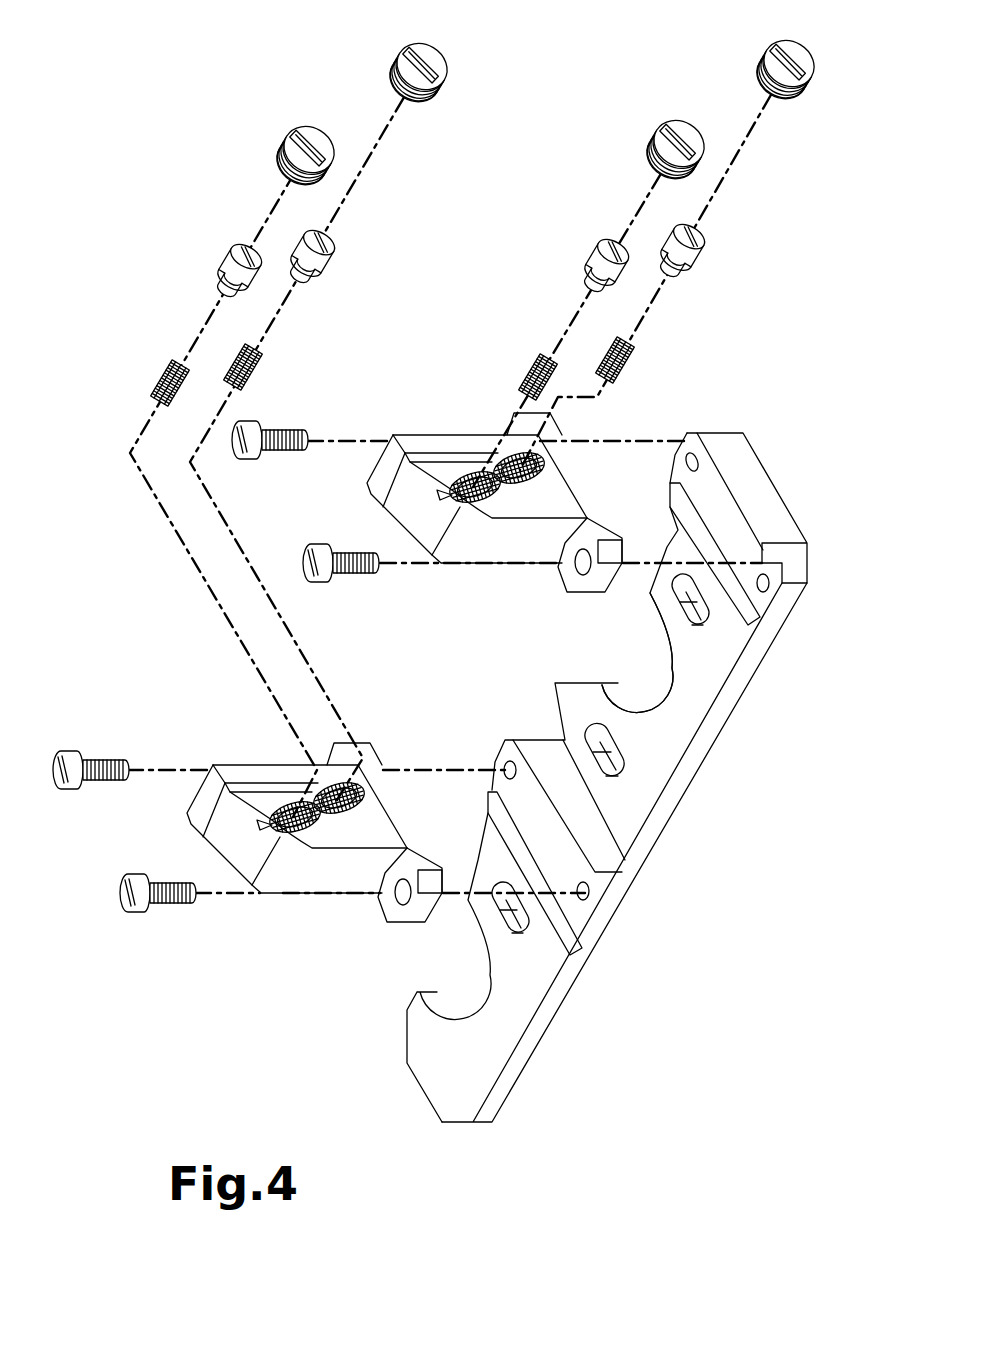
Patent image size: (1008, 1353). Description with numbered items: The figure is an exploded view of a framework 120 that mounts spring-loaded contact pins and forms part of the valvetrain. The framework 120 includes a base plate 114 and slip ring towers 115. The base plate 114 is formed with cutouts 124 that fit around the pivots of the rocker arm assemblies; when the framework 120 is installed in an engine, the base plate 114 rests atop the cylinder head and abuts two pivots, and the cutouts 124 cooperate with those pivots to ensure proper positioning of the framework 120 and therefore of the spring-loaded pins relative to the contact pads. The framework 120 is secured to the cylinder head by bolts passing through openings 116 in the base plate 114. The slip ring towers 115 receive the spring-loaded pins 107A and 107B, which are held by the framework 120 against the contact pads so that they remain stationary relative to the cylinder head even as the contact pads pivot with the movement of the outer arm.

The framework 120 is at (177, 215).
The spring-loaded pin 107A is at (592, 287).
The spring-loaded pin 107B is at (665, 266).
The slip ring tower 115 is at (550, 492).
The cutout 124 is at (612, 689).
The base plate 114 is at (660, 752).
The opening 116 is at (601, 762).